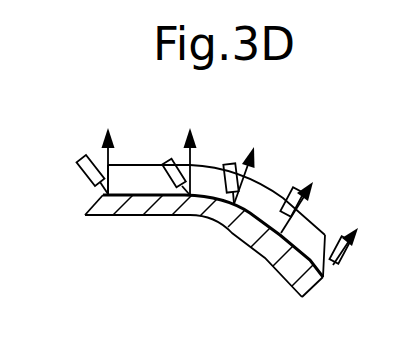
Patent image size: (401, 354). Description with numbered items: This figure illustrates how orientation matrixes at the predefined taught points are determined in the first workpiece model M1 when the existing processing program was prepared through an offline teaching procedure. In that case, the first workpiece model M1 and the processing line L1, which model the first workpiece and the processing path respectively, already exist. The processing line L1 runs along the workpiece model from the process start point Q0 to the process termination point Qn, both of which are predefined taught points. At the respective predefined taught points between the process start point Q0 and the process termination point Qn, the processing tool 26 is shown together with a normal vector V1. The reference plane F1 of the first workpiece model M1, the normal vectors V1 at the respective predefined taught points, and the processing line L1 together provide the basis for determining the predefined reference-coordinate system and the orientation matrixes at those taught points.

The processing tool 26 is at (167, 163).
The normal vectors V1 is at (191, 153).
The process start point Q0 is at (92, 203).
The process termination point Qn is at (323, 277).
The processing line L1 is at (158, 213).
The reference plane F1 is at (183, 217).
The first workpiece model M1 is at (225, 239).